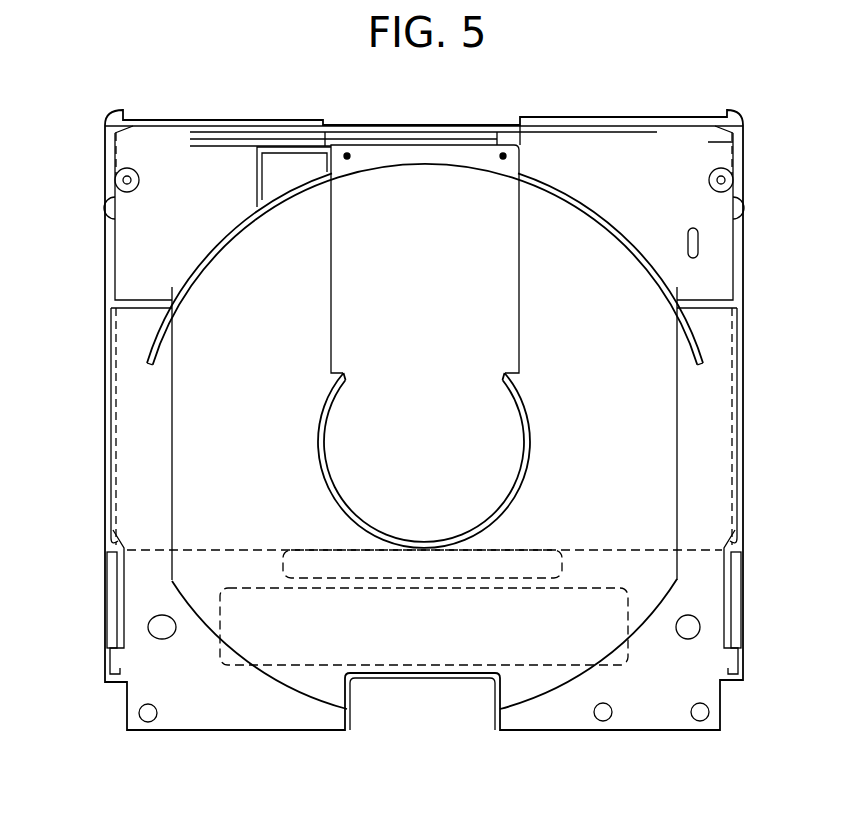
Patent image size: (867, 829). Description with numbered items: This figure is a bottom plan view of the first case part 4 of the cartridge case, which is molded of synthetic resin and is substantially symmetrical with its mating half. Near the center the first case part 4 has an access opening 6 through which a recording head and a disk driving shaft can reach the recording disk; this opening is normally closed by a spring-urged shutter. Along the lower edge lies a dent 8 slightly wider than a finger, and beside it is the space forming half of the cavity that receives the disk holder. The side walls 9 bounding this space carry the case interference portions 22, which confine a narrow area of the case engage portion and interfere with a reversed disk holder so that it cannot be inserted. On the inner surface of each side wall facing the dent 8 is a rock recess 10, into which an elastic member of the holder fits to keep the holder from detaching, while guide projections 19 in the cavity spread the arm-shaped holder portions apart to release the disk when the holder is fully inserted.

The first case part 4 is at (725, 420).
The access opening 6 is at (416, 380).
The dent 8 is at (437, 722).
The side walls 9 is at (108, 448).
The rock recess 10 is at (122, 655).
The guide projections 19 is at (150, 337).
The case interference portions 22 is at (93, 547).